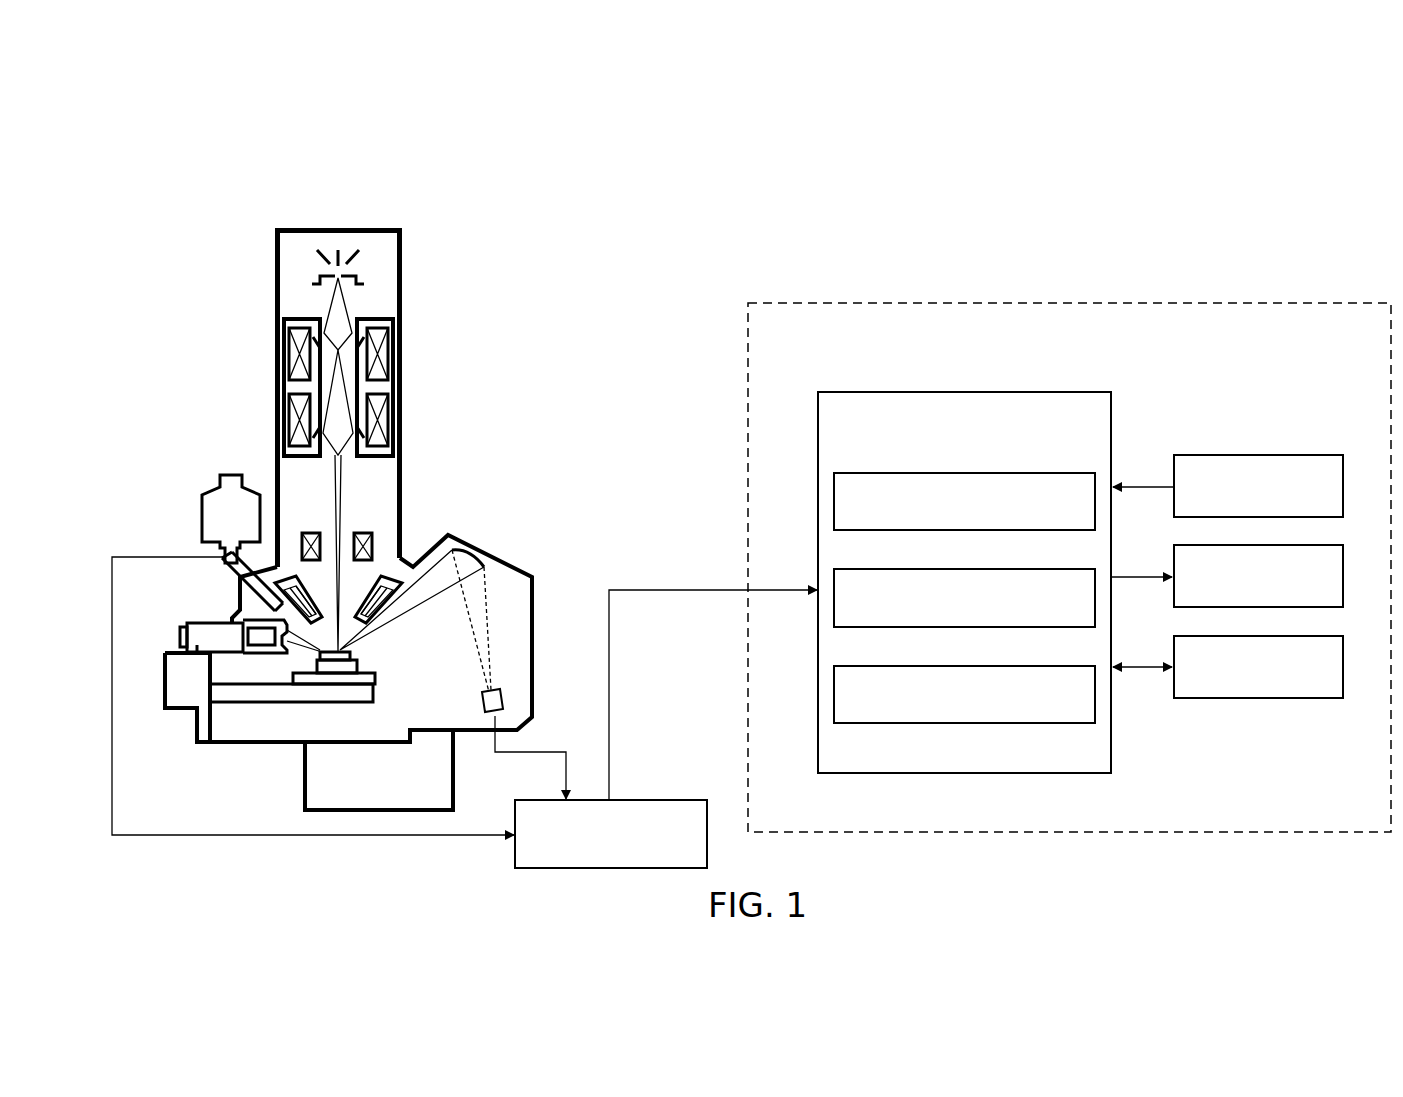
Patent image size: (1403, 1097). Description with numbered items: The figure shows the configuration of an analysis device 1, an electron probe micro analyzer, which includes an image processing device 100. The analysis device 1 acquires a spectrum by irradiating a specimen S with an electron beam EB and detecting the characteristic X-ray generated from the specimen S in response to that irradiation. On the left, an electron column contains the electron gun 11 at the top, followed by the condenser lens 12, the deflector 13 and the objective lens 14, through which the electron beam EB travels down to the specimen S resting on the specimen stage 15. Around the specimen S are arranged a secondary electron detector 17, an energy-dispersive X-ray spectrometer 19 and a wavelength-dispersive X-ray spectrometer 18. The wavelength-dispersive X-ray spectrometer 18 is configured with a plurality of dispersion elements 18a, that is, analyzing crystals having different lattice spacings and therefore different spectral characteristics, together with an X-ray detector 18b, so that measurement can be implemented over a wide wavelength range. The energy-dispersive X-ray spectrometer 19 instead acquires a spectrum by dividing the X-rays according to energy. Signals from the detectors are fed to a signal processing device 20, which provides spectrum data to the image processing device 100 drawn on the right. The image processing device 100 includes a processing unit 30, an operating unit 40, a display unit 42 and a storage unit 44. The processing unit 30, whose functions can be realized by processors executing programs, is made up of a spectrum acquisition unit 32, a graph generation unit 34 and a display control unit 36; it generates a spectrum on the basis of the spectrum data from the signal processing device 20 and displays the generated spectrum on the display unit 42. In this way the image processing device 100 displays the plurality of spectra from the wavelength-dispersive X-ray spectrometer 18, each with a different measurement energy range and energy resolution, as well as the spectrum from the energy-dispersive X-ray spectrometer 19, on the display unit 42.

The analysis device 1 is at (1257, 106).
The electron gun 11 is at (320, 258).
The electron beam EB is at (350, 298).
The condenser lens 12 is at (276, 378).
The deflector 13 is at (368, 533).
The objective lens 14 is at (388, 580).
The specimen stage 15 is at (372, 684).
The specimen S is at (352, 656).
The secondary electron detector 17 is at (186, 640).
The wavelength-dispersive X-ray spectrometer 18 is at (502, 584).
The dispersion element 18a is at (470, 548).
The X-ray detector 18b is at (507, 700).
The energy-dispersive X-ray spectrometer 19 is at (216, 512).
The signal processing device 20 is at (666, 800).
The image processing device 100 is at (1317, 302).
The processing unit 30 is at (1057, 392).
The spectrum acquisition unit 32 is at (1052, 473).
The graph generation unit 34 is at (1052, 569).
The display control unit 36 is at (1052, 666).
The operating unit 40 is at (1307, 455).
The display unit 42 is at (1307, 545).
The storage unit 44 is at (1307, 636).